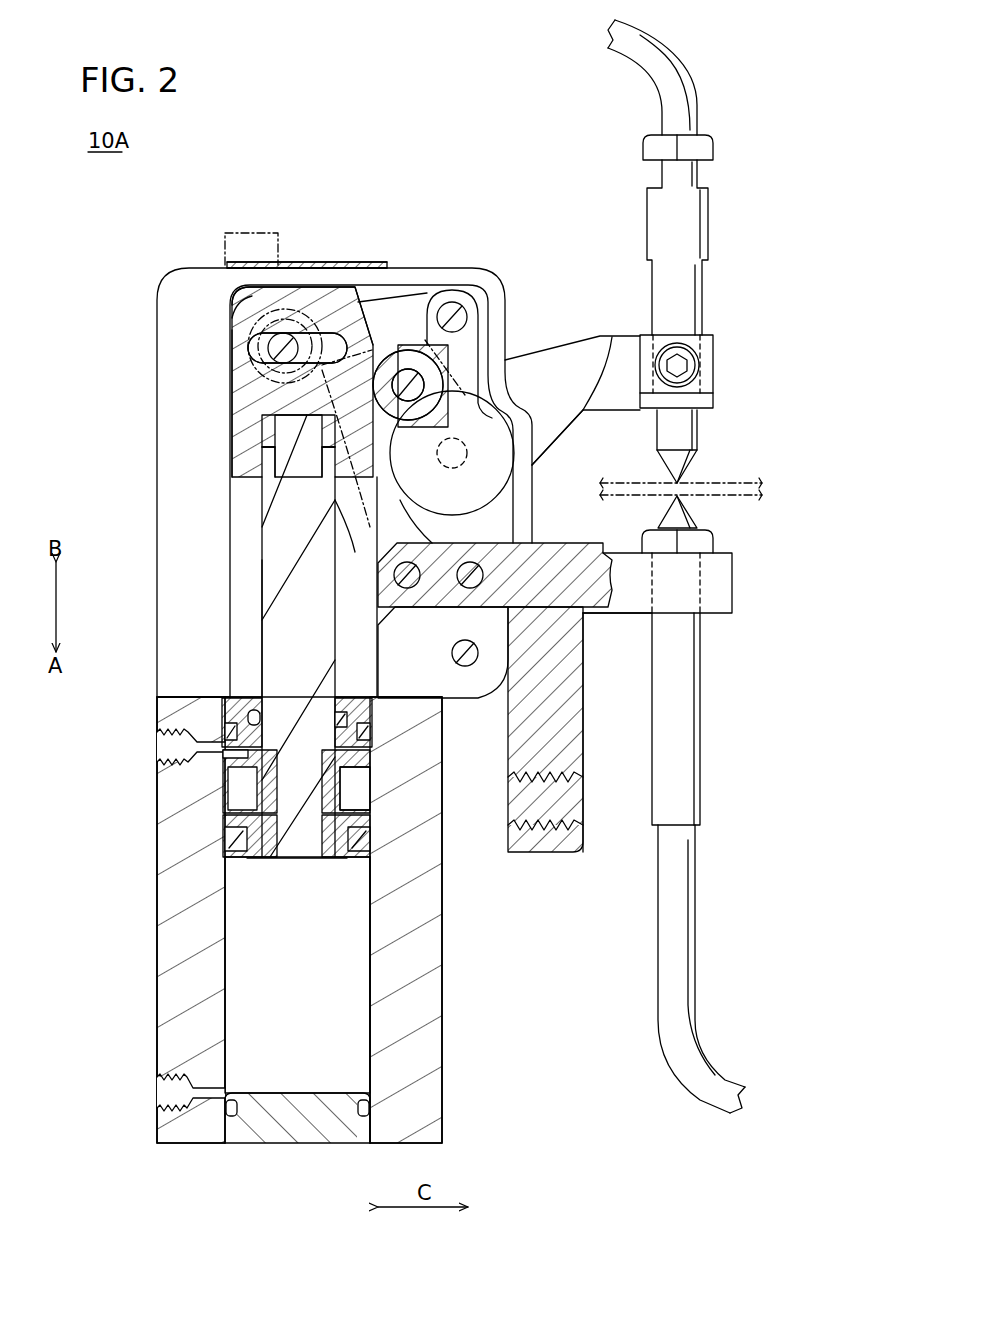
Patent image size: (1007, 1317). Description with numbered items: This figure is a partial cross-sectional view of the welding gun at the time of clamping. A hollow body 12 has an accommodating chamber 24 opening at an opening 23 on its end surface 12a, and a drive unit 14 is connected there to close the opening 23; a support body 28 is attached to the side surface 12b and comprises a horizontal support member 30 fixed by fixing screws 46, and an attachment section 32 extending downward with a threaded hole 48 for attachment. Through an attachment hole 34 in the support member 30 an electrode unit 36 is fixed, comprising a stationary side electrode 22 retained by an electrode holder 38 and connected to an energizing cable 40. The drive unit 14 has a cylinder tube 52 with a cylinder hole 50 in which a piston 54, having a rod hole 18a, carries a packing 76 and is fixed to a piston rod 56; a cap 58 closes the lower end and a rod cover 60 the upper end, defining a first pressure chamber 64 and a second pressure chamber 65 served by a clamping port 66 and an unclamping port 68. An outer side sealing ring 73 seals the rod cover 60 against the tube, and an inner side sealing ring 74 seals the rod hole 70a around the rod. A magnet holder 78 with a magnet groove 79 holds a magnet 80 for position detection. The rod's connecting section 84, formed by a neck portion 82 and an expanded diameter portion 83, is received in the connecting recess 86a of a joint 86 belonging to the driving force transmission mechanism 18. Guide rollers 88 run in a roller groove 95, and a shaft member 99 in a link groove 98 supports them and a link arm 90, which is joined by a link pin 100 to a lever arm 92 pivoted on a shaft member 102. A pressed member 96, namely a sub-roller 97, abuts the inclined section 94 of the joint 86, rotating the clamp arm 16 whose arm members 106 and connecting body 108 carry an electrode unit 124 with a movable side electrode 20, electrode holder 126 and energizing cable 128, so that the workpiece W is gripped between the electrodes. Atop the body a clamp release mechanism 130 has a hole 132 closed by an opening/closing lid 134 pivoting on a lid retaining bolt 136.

The body 12 is at (153, 393).
The end surface 12a is at (155, 712).
The side surface 12b is at (510, 647).
The drive unit 14 is at (153, 902).
The clamp arm 16 is at (604, 332).
The driving force transmission mechanism 18 is at (224, 382).
The rod hole 18a is at (303, 868).
The movable side electrode 20 is at (697, 443).
The stationary side electrode 22 is at (690, 513).
The opening 23 is at (362, 720).
The accommodating chamber 24 is at (240, 577).
The support body 28 is at (735, 585).
The support member 30 is at (563, 551).
The attachment section 32 is at (578, 734).
The attachment hole 34 is at (655, 603).
The electrode unit 36 is at (716, 538).
The electrode holder 38 is at (690, 670).
The energizing cable 40 is at (688, 882).
The fixing screws 46 is at (460, 580).
The threaded hole for attachment 48 is at (573, 808).
The cylinder hole 50 is at (350, 1037).
The cylinder tube 52 is at (442, 1003).
The piston 54 is at (258, 866).
The piston rod 56 is at (258, 622).
The cap 58 is at (284, 1137).
The rod cover 60 is at (244, 725).
The first pressure chamber 64 is at (240, 1014).
The second pressure chamber 65 is at (223, 772).
The clamping port 66 is at (163, 1103).
The unclamping port 68 is at (167, 752).
The rod hole 70a is at (305, 718).
The outer side sealing ring 73 is at (230, 725).
The inner side sealing ring 74 is at (262, 714).
The packing 76 is at (372, 838).
The magnet holder 78 is at (345, 770).
The magnet groove 79 is at (345, 800).
The magnet 80 is at (236, 802).
The neck portion 82 is at (360, 470).
The expanded diameter portion 83 is at (290, 423).
The connecting section 84 is at (258, 440).
The joint 86 is at (226, 330).
The connecting recess 86a is at (305, 430).
The guide rollers 88 is at (233, 312).
The link arm 90 is at (398, 356).
The lever arm 92 is at (482, 340).
The inclined section 94 is at (370, 342).
The roller groove 95 is at (355, 552).
The pressed member 96 is at (410, 368).
The sub-roller 97 is at (410, 368).
The link groove 98 is at (336, 338).
The shaft member 99 is at (283, 350).
The link pin 100 is at (462, 312).
The shaft member 102 is at (458, 468).
The arm members 106 is at (560, 416).
The connecting body 108 is at (712, 398).
The electrode unit 124 is at (710, 425).
The electrode holder 126 is at (702, 300).
The energizing cable 128 is at (702, 88).
The clamp release mechanism 130 is at (300, 258).
The hole 132 is at (309, 278).
The opening/closing lid 134 is at (244, 260).
The lid retaining bolt 136 is at (252, 232).
The workpiece W is at (629, 481).